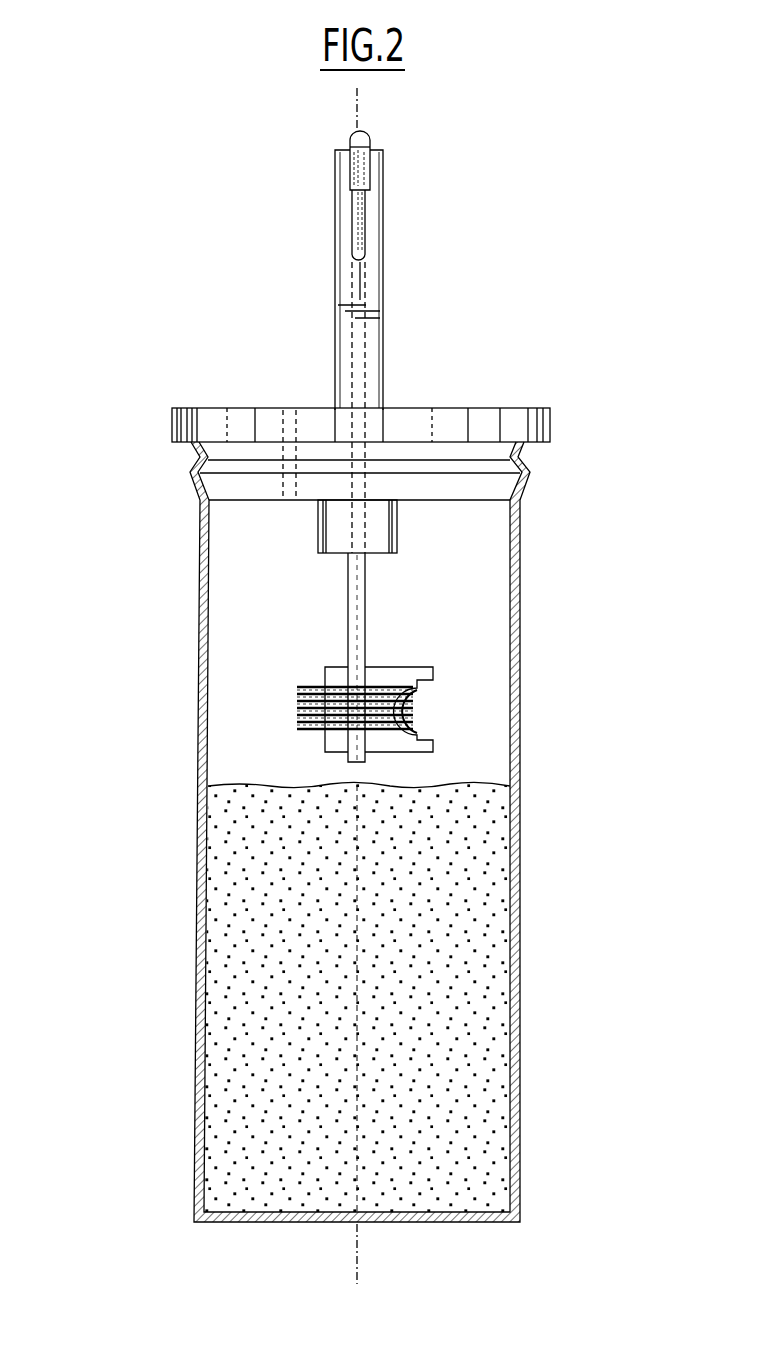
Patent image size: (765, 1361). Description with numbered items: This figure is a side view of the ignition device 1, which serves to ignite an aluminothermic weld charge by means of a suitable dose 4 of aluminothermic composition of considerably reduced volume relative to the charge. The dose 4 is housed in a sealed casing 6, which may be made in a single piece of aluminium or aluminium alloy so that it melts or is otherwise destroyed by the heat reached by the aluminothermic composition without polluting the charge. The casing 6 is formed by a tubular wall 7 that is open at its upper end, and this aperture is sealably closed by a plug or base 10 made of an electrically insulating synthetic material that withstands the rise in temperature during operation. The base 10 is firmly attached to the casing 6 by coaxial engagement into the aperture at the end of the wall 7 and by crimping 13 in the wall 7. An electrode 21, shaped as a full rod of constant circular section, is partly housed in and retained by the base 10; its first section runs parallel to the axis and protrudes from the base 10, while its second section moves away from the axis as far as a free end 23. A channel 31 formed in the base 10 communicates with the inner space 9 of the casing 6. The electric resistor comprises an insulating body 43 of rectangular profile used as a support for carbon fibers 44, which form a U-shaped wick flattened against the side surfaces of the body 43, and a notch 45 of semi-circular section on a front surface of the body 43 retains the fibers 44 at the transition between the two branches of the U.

The ignition device 1 is at (110, 819).
The dose of aluminothermic composition 4 is at (478, 1012).
The sealed casing 6 is at (193, 1040).
The tubular wall 7 is at (197, 972).
The inner space of the casing 9 is at (218, 530).
The plug (base) 10 is at (505, 418).
The crimping 13 is at (543, 472).
The electrode 21 is at (365, 285).
The free end of the electrode 23 is at (370, 145).
The channel 31 is at (290, 500).
The insulating body 43 is at (433, 668).
The carbon fibers 44 is at (305, 688).
The notch 45 is at (410, 707).